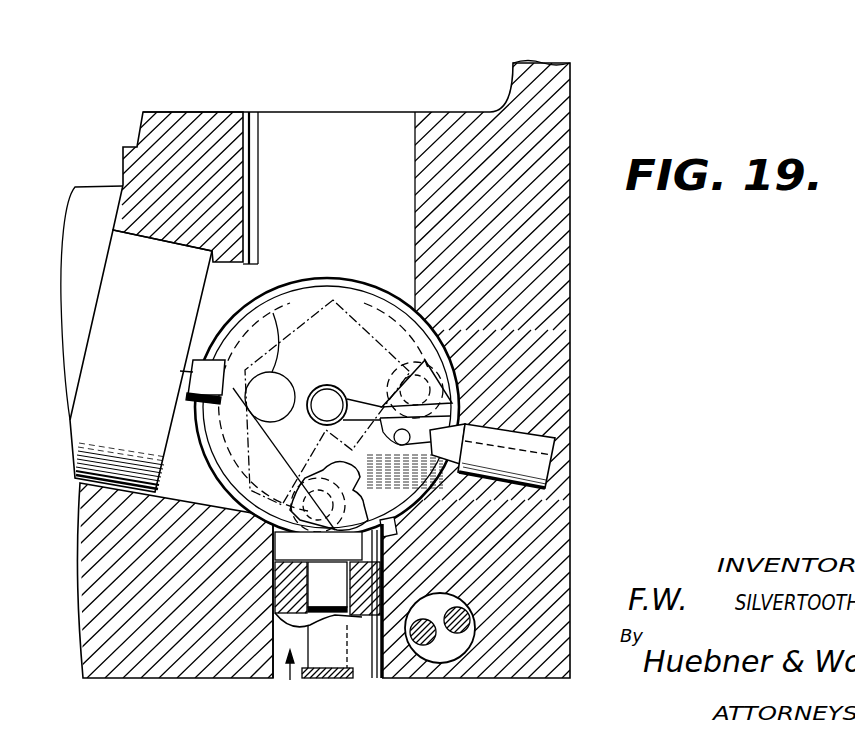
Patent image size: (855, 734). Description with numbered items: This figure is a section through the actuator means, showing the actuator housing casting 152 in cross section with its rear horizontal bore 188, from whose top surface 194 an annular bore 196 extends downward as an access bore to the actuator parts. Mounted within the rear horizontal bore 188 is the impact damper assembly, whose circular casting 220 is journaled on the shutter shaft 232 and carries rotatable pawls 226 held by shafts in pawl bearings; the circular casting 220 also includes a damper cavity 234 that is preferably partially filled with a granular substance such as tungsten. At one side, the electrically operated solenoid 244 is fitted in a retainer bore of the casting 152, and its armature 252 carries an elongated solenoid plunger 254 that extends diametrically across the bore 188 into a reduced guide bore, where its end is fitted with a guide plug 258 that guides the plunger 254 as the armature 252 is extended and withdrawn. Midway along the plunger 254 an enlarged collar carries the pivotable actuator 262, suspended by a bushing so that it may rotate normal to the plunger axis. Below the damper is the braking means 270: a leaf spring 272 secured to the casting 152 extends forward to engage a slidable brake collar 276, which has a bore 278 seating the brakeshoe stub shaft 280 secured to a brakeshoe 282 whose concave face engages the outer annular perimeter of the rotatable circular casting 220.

The actuator housing casting 152 is at (479, 108).
The rear horizontal bore 188 is at (317, 278).
The top surface 194 is at (192, 112).
The annular bore 196 is at (415, 127).
The circular casting 220 is at (413, 348).
The pawl 226 is at (370, 432).
The shutter shaft 232 is at (328, 400).
The damper cavity 234 is at (361, 283).
The solenoid 244 is at (87, 220).
The armature 252 is at (141, 361).
The solenoid plunger 254 is at (188, 379).
The guide plug 258 is at (530, 462).
The pivotable actuator 262 is at (282, 298).
The braking means 270 is at (283, 681).
The leaf spring 272 is at (317, 679).
The slidable brake collar 276 is at (383, 662).
The bore 278 is at (320, 624).
The brakeshoe stub shaft 280 is at (318, 579).
The brakeshoe 282 is at (283, 547).